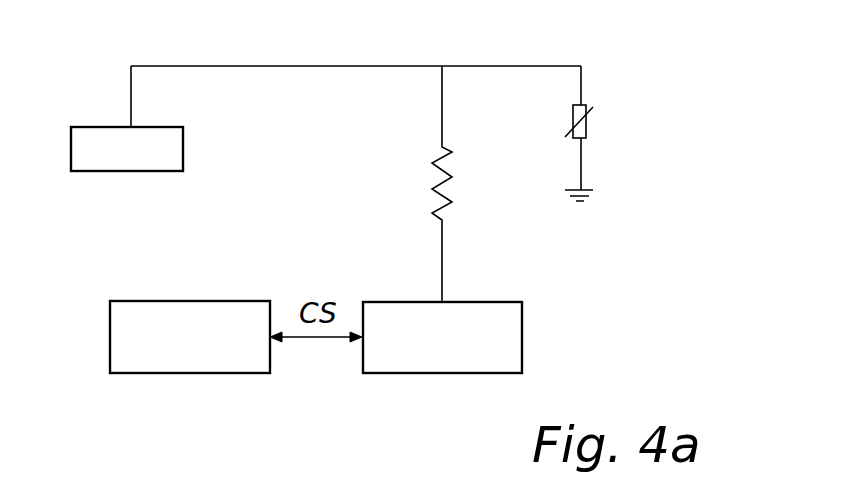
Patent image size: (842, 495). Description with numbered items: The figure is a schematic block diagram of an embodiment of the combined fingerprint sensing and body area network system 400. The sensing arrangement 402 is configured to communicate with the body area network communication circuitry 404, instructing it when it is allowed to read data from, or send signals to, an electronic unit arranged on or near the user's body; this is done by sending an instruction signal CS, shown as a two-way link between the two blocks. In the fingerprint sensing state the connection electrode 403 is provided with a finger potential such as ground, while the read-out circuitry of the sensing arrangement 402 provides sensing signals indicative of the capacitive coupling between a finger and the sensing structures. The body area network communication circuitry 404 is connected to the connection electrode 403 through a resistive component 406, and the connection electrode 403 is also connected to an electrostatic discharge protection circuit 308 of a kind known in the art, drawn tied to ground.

The combined fingerprint sensing and body area network system 400 is at (647, 99).
The connection electrode 403 is at (91, 127).
The resistive component 406 is at (420, 187).
The electrostatic discharge protection circuit 308 is at (573, 117).
The sensing arrangement 402 is at (196, 374).
The body area network communication circuitry 404 is at (440, 374).